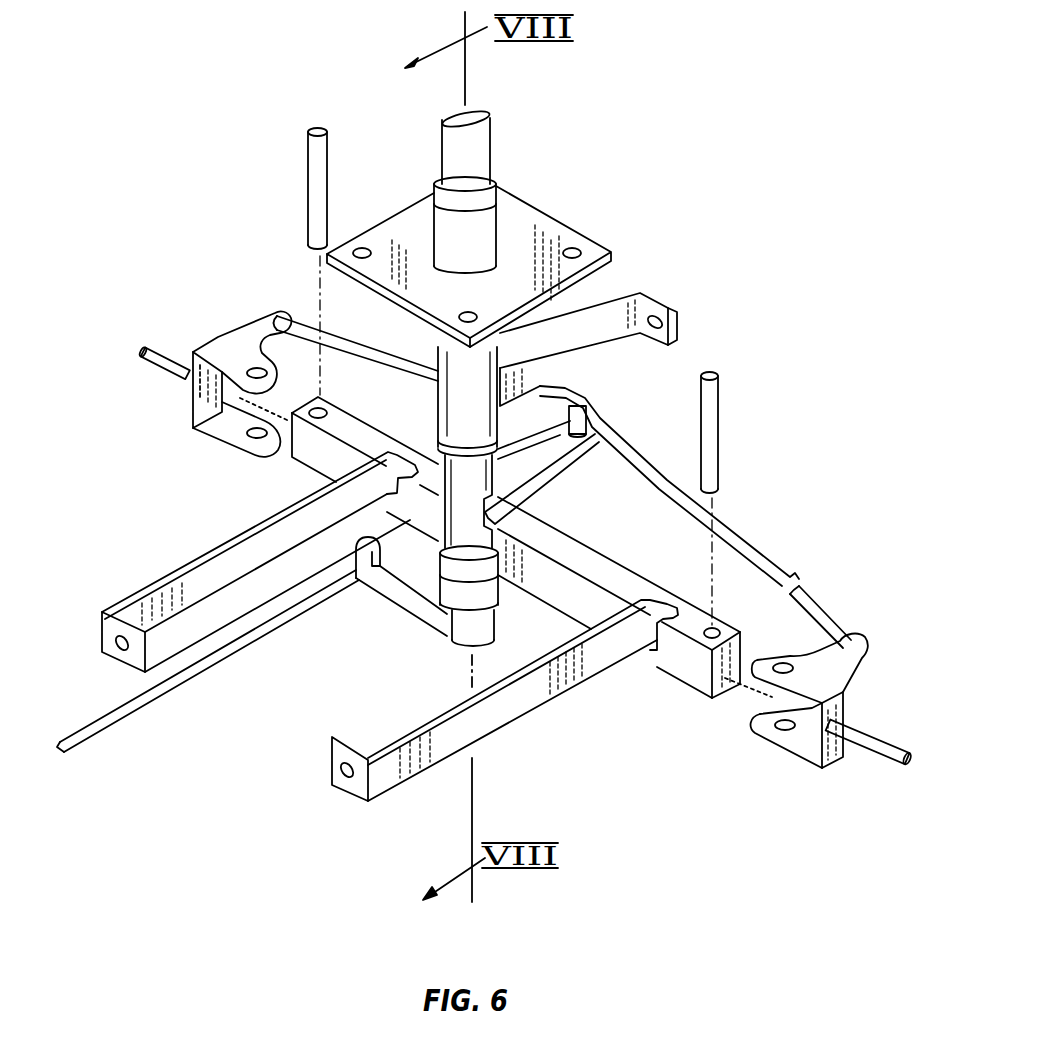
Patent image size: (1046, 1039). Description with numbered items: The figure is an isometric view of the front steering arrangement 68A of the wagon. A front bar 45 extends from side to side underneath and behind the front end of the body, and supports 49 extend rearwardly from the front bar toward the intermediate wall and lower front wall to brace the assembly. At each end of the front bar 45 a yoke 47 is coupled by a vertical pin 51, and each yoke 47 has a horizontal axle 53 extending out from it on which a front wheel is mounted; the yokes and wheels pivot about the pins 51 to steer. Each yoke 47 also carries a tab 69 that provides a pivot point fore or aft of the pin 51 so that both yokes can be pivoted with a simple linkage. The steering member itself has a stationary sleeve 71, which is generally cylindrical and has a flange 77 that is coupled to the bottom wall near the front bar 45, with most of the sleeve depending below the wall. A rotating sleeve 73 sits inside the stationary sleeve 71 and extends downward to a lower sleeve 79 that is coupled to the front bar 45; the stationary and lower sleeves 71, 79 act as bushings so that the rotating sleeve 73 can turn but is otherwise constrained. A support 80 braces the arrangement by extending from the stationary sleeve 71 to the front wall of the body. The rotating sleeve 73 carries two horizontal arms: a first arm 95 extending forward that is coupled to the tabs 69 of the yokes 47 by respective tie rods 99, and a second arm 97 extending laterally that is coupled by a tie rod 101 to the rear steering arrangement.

The front steering arrangement 68A is at (531, 151).
The flange 77 is at (555, 240).
The stationary sleeve 71 is at (452, 405).
The rotating sleeve 73 is at (470, 542).
The lower sleeve 79 is at (442, 600).
The second arm 97 is at (397, 570).
The tie rod 101 is at (97, 730).
The supports 49 is at (205, 572).
The front bar 45 is at (683, 623).
The support 80 is at (636, 290).
The first arm 95 is at (550, 452).
The tie rods 99 is at (402, 350).
The tab 69 is at (258, 335).
The yoke 47 is at (240, 450).
The horizontal axle 53 is at (170, 365).
The vertical pin 51 is at (305, 192).